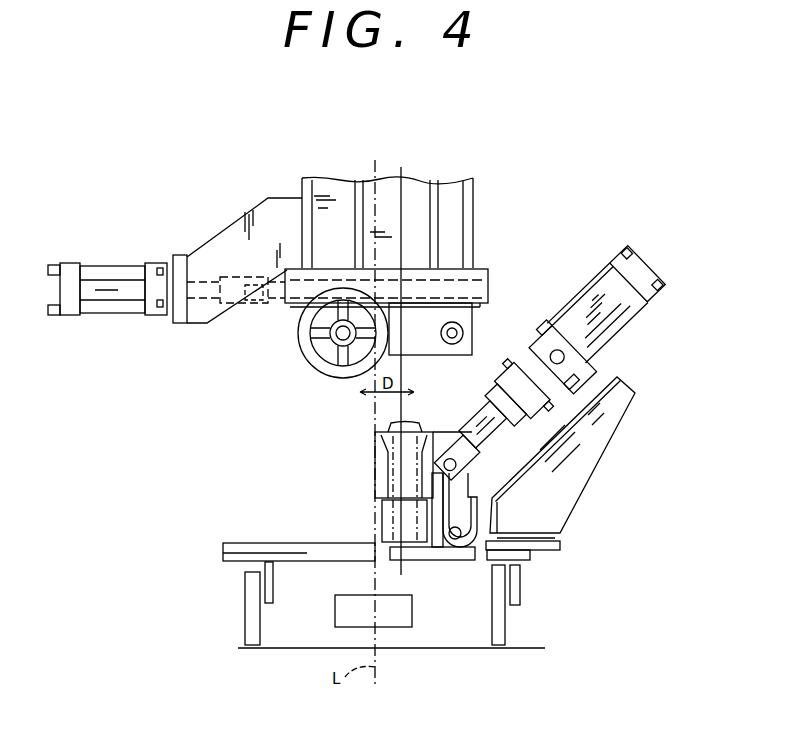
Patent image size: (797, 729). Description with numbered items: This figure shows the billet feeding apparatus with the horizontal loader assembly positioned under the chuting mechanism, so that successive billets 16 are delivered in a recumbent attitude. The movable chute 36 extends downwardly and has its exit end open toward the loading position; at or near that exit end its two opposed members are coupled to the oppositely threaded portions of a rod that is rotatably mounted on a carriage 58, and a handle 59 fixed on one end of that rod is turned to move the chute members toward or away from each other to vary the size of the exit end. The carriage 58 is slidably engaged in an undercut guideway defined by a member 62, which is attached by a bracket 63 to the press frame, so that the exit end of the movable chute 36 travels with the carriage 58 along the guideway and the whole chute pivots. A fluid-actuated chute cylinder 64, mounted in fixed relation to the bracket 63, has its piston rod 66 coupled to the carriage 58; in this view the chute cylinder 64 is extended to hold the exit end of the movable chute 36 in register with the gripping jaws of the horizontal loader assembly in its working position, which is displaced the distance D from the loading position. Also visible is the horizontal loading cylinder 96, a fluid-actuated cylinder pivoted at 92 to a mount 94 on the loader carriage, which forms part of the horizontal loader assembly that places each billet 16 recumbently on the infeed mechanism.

The billet 16 is at (390, 422).
The movable chute 36 is at (417, 187).
The carriage 58 is at (464, 320).
The handle 59 is at (298, 341).
The member 62 is at (475, 272).
The bracket 63 is at (466, 209).
The chute cylinder 64 is at (124, 281).
The piston rod 66 is at (204, 280).
The pivot 92 is at (545, 330).
The mount 94 is at (598, 450).
The horizontal loading cylinder 96 is at (600, 322).